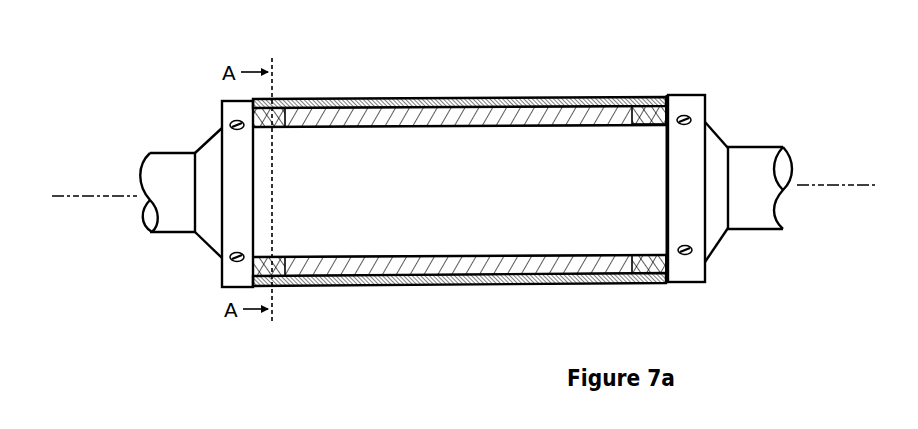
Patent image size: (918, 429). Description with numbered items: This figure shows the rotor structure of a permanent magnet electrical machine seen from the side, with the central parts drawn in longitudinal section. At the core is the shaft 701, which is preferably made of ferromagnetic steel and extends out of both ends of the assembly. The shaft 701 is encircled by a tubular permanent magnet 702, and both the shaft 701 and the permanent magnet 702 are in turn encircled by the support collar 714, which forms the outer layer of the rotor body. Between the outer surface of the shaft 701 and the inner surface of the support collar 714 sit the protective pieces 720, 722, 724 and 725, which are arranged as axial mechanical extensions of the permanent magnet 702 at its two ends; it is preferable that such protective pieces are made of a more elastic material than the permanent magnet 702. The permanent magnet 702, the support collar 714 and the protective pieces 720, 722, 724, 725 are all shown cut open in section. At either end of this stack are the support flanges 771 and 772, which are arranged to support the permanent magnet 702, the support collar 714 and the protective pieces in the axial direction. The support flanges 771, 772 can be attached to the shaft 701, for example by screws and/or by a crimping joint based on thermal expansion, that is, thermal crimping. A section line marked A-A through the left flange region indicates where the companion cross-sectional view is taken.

The shaft 701 is at (440, 236).
The permanent magnet 702 is at (452, 128).
The support collar 714 is at (517, 98).
The protective piece 720 is at (278, 130).
The protective piece 722 is at (277, 258).
The protective piece 724 is at (645, 126).
The protective piece 725 is at (660, 256).
The support flange 771 is at (222, 265).
The support flange 772 is at (707, 263).